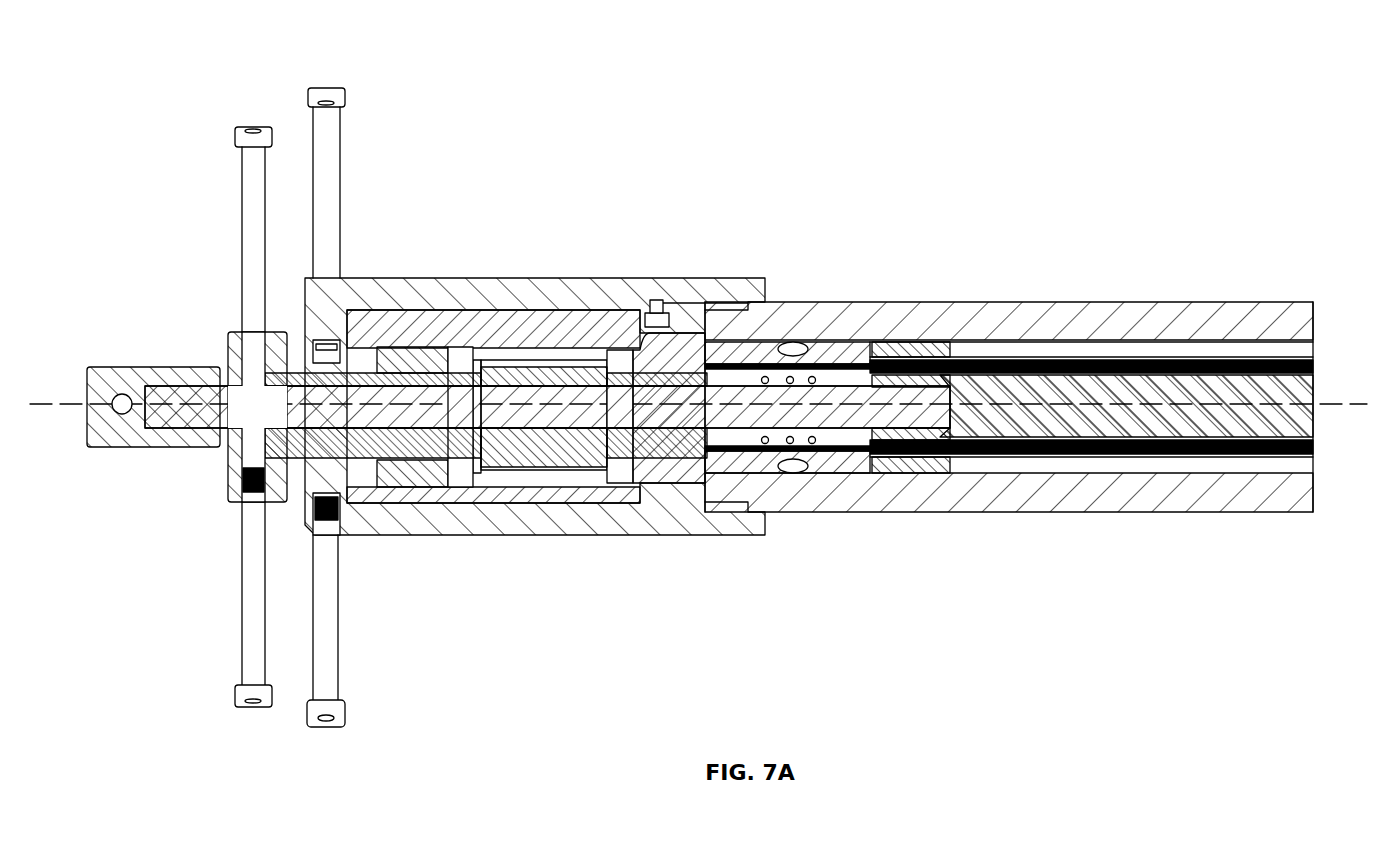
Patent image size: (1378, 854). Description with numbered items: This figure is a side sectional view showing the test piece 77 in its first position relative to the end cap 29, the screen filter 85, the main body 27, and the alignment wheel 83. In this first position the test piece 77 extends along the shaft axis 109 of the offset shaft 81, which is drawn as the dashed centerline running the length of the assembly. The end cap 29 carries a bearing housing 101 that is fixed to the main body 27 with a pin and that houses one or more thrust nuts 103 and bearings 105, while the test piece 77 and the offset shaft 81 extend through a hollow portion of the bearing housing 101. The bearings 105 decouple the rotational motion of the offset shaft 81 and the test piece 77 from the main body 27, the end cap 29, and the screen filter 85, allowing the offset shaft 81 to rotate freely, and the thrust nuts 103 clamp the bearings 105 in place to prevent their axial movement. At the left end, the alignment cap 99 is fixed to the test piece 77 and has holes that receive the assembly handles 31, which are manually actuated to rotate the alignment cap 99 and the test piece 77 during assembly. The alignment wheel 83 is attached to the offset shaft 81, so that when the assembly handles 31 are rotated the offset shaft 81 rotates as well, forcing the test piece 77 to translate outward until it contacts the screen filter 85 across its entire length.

The main body 27 is at (1302, 488).
The end cap 29 is at (757, 292).
The assembly handles 31 is at (265, 205).
The test piece 77 is at (1302, 385).
The offset shaft 81 is at (567, 452).
The alignment wheel 83 is at (228, 352).
The screen filter 85 is at (1218, 355).
The alignment cap 99 is at (165, 450).
The bearing housing 101 is at (505, 495).
The thrust nuts 103 is at (400, 490).
The bearings 105 is at (618, 350).
The shaft axis 109 is at (1362, 406).